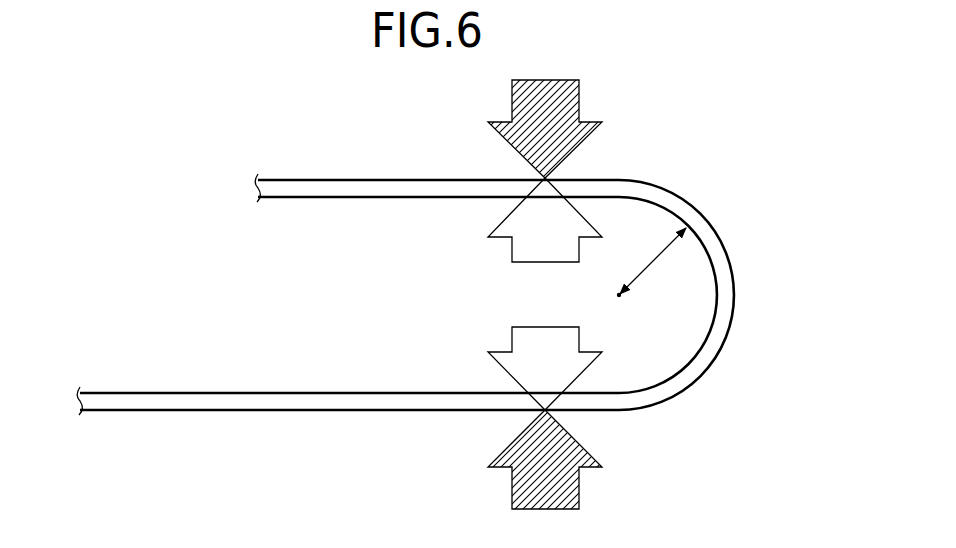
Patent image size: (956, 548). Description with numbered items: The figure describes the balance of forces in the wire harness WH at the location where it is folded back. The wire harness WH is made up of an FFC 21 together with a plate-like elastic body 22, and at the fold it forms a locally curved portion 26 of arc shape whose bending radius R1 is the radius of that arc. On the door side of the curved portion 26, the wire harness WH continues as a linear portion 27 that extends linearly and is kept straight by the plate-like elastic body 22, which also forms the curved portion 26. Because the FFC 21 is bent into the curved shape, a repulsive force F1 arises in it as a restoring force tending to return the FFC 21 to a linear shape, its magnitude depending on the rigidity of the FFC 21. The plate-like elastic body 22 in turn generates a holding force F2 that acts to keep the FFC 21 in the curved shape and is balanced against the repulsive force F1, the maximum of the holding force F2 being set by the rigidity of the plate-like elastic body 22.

The wire harness WH is at (299, 176).
The FFC 21 is at (333, 178).
The plate-like elastic body 22 is at (325, 199).
The curved portion 26 is at (690, 220).
The linear portion 27 is at (411, 194).
The repulsive force F1 is at (512, 252).
The holding force F2 is at (579, 100).
The bending radius R1 is at (650, 259).